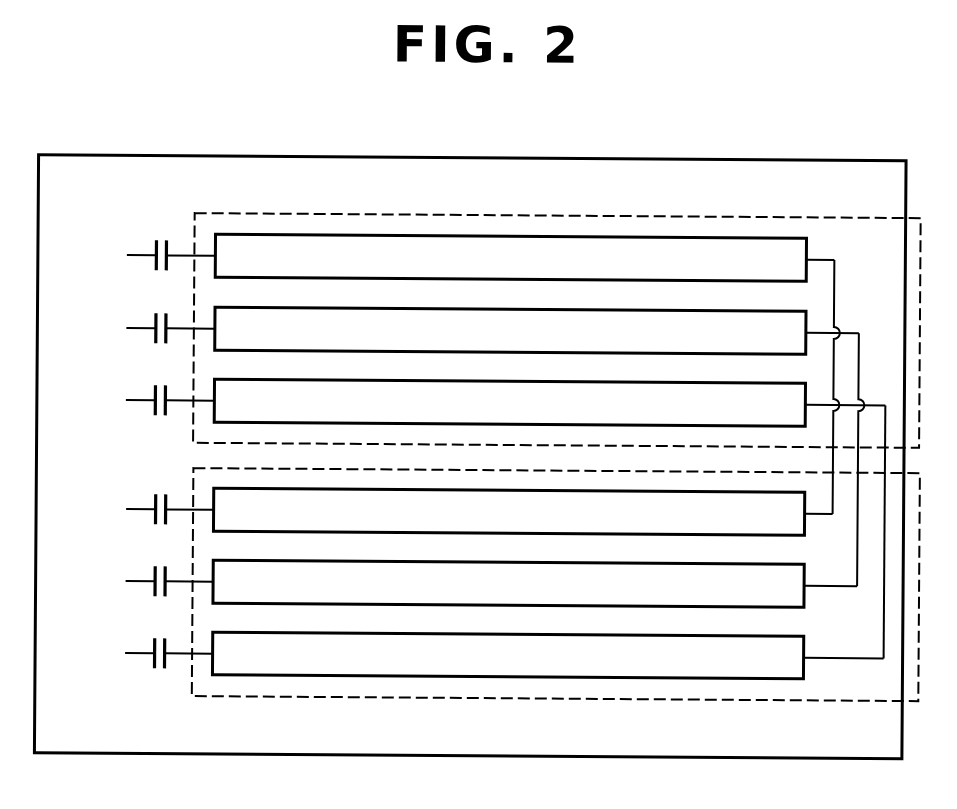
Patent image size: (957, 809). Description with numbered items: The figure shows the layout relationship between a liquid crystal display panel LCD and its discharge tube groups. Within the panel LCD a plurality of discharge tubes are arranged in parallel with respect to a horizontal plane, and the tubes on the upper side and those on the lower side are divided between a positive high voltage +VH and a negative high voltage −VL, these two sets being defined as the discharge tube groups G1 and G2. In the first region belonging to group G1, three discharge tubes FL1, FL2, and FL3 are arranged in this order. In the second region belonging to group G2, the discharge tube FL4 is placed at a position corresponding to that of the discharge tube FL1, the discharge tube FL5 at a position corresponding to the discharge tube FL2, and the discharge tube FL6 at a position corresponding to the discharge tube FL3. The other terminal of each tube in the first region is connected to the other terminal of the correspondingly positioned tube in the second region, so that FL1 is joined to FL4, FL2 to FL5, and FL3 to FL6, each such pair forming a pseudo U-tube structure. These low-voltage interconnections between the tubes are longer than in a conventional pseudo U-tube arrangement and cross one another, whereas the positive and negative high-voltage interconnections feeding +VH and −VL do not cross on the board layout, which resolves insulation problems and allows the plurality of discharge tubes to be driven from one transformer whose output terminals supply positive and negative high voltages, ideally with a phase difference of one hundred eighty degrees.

The liquid crystal display panel LCD is at (788, 157).
The discharge tube group G1 is at (518, 214).
The discharge tube group G2 is at (522, 699).
The discharge tube FL1 is at (524, 257).
The discharge tube FL2 is at (537, 330).
The discharge tube FL3 is at (549, 403).
The discharge tube FL4 is at (522, 511).
The discharge tube FL5 is at (535, 583).
The discharge tube FL6 is at (547, 655).
The positive high voltage VH is at (118, 238).
The negative high voltage VL is at (119, 492).